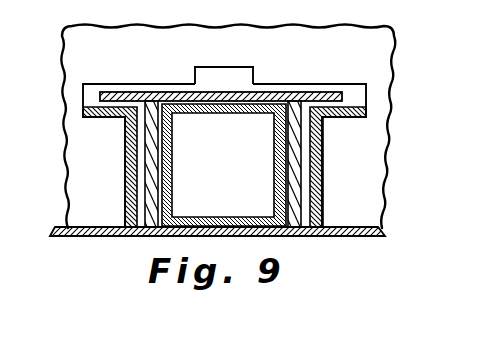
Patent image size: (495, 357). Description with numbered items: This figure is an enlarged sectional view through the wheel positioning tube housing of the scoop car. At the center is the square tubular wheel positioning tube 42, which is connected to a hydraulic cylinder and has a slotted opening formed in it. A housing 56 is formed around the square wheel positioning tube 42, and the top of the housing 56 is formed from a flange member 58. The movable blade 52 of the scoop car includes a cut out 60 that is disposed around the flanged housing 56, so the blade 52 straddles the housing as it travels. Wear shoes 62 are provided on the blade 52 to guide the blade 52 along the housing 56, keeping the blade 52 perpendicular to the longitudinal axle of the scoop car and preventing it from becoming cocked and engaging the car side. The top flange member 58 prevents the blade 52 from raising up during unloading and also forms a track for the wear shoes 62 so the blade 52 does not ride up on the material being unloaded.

The wheel positioning tube 42 is at (173, 152).
The blade 52 is at (398, 56).
The housing 56 is at (151, 189).
The flange member 58 is at (325, 85).
The cut out 60 is at (245, 78).
The wear shoes 62 is at (125, 148).